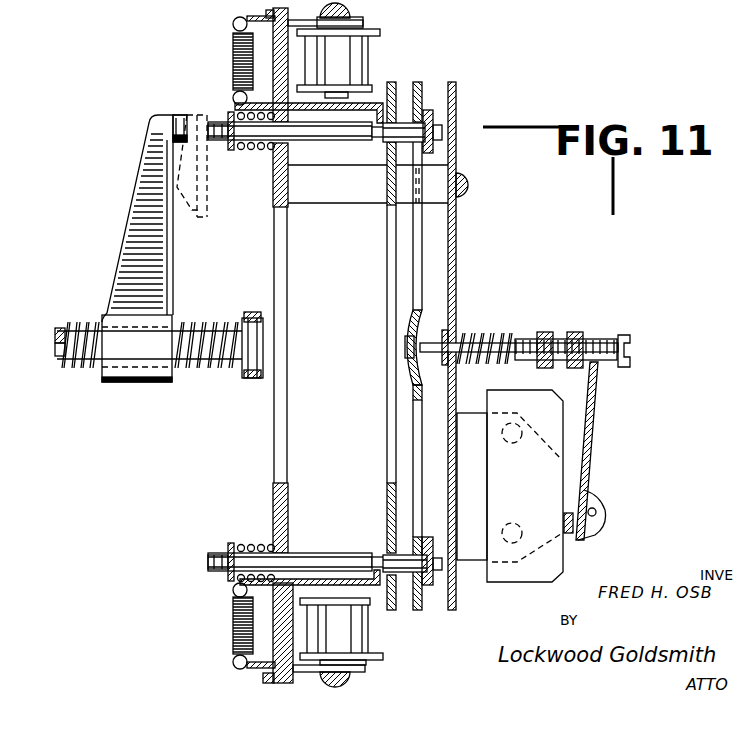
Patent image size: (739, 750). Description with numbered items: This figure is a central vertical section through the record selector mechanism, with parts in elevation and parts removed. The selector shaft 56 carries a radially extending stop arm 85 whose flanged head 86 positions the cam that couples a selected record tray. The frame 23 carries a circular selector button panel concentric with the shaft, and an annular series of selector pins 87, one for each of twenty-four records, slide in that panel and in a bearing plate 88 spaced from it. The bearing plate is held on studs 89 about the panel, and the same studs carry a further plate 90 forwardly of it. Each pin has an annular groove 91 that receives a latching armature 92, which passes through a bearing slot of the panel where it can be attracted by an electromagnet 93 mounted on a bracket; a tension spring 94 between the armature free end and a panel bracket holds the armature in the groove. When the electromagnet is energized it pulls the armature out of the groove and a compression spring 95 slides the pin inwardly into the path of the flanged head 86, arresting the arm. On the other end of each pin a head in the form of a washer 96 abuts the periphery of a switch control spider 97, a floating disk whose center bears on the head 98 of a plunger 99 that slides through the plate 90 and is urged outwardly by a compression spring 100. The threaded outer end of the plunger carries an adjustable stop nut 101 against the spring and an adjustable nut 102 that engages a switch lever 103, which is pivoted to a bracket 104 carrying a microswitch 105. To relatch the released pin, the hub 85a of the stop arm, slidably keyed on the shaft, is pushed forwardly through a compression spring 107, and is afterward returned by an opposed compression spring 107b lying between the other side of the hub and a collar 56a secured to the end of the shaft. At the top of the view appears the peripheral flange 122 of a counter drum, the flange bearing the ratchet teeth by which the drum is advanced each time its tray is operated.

The frame 23 is at (275, 497).
The selector shaft 56 is at (82, 320).
The collar 56a is at (256, 382).
The stop arm 85 is at (155, 212).
The hub 85a is at (133, 383).
The flanged head 86 is at (181, 120).
The selector pin 87 is at (221, 122).
The bearing plate 88 is at (395, 87).
The studs 89 is at (338, 197).
The plate 90 is at (456, 116).
The annular groove 91 is at (373, 136).
The latching armature 92 is at (379, 100).
The electromagnet 93 is at (352, 55).
The tension spring 94 is at (236, 42).
The compression spring 95 is at (250, 151).
The washer 96 is at (433, 112).
The switch control spider 97 is at (414, 311).
The plunger head 98 is at (413, 332).
The plunger 99 is at (503, 333).
The compression spring 100 is at (478, 326).
The adjustable stop nut 101 is at (547, 333).
The adjustable nut 102 is at (578, 327).
The switch lever 103 is at (586, 422).
The bracket 104 is at (583, 498).
The microswitch 105 is at (511, 572).
The compression spring 107 is at (80, 372).
The compression spring 107b is at (197, 372).
The peripheral flange 122 is at (592, 0).